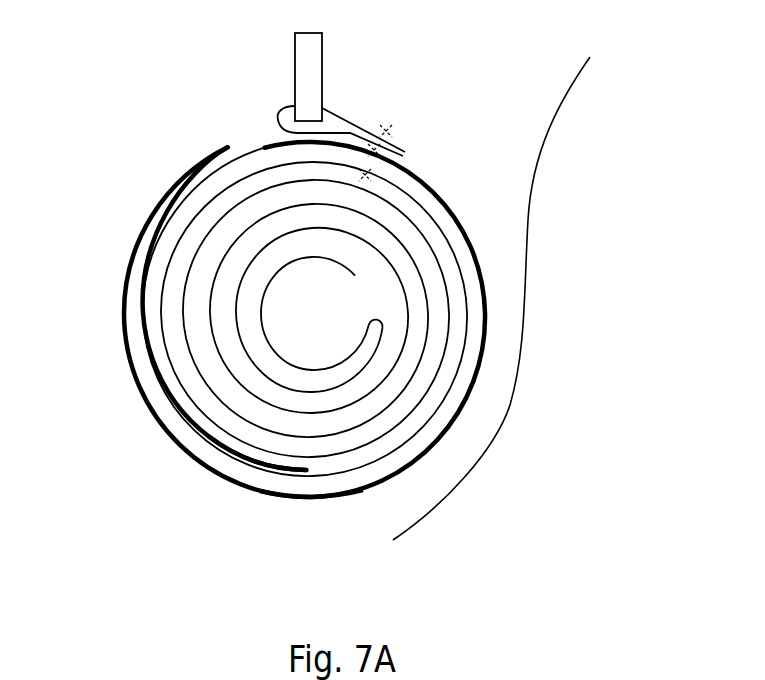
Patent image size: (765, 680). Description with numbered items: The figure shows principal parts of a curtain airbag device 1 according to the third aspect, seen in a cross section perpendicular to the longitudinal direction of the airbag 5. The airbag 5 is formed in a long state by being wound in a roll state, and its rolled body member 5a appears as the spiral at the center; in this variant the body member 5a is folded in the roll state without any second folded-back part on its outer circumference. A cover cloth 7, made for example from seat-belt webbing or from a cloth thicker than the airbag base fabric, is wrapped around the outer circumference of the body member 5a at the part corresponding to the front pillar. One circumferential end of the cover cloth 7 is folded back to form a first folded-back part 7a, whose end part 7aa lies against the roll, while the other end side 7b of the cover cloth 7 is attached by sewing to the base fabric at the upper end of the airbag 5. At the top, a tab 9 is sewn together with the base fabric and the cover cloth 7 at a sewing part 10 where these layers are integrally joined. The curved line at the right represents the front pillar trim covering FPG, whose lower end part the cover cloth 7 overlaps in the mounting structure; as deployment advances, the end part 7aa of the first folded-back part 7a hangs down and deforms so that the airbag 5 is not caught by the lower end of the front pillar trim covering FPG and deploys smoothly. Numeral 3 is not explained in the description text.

The curtain airbag device 1 is at (478, 70).
The tab / attachment piece 3 is at (303, 72).
The airbag 5 is at (399, 312).
The body member 5a is at (454, 240).
The cover cloth 7 is at (205, 484).
The first folded-back part 7a is at (149, 318).
The end part of the first folded-back part 7aa is at (312, 479).
The other end side of the cover cloth 7b is at (334, 501).
The tab 9 is at (343, 113).
The sewing part 10 is at (386, 134).
The front pillar trim covering FPG is at (521, 338).